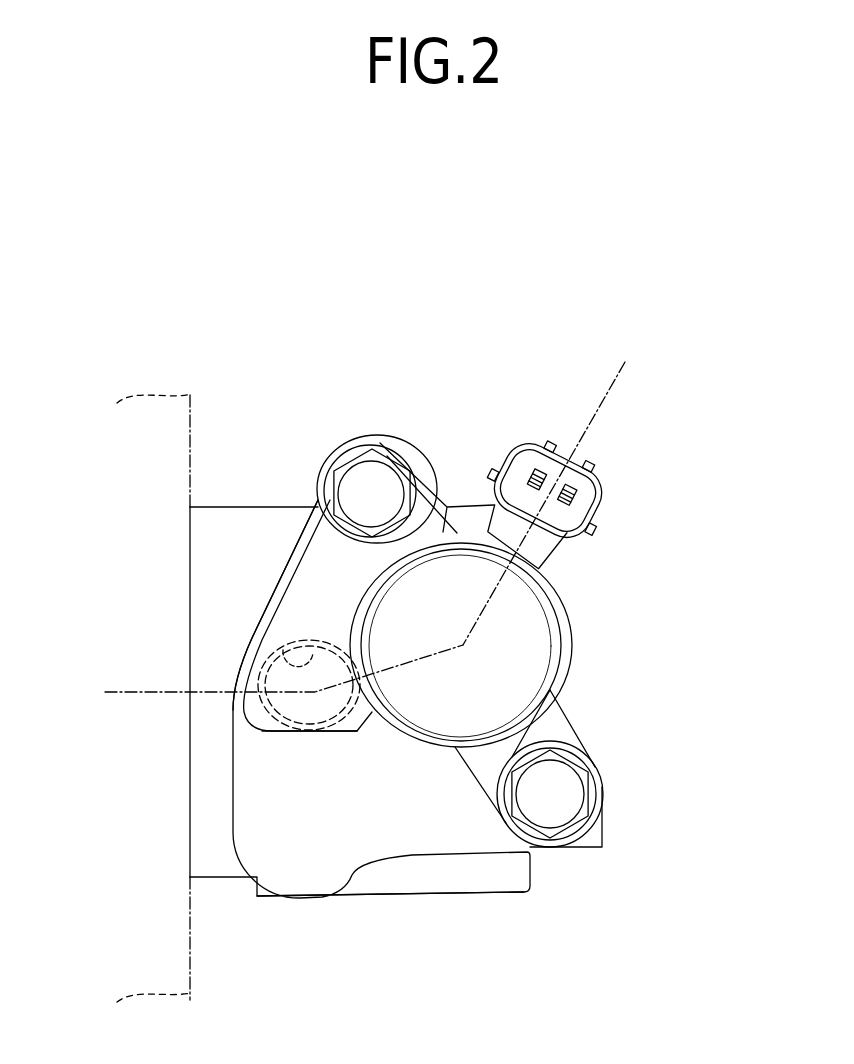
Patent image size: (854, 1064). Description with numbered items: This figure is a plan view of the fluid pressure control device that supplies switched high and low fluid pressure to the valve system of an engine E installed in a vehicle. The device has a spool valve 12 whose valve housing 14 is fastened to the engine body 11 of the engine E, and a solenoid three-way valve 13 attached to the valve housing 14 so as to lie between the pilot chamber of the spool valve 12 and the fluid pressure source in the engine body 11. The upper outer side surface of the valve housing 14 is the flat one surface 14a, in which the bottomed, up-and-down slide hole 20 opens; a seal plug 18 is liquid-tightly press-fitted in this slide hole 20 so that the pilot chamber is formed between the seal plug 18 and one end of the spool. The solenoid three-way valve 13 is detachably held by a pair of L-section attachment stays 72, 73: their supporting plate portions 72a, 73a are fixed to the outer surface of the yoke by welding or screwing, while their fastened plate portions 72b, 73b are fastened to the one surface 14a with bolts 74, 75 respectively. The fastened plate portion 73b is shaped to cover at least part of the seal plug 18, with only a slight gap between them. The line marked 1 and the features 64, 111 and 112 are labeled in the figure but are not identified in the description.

The section line 1- 1 is at (675, 347).
The engine body 11 is at (197, 938).
The spool valve 12 is at (240, 672).
The solenoid three-way valve 13 is at (592, 594).
The valve housing 14 is at (241, 500).
The one surface 14a is at (456, 840).
The seal plug 18 is at (317, 732).
The slide hole 20 is at (264, 646).
The inner peripheral surface 64 is at (528, 647).
The attachment stay 72 is at (617, 748).
The supporting plate portion 72a is at (548, 697).
The fastened plate portion 72b is at (563, 742).
The attachment stay 73 is at (432, 424).
The supporting plate portion 73a is at (448, 505).
The fastened plate portion 73b is at (429, 510).
The bolt 74 is at (561, 808).
The bolt 75 is at (355, 485).
The terminals 111 is at (576, 487).
The connector 112 is at (598, 503).
The engine E is at (206, 428).